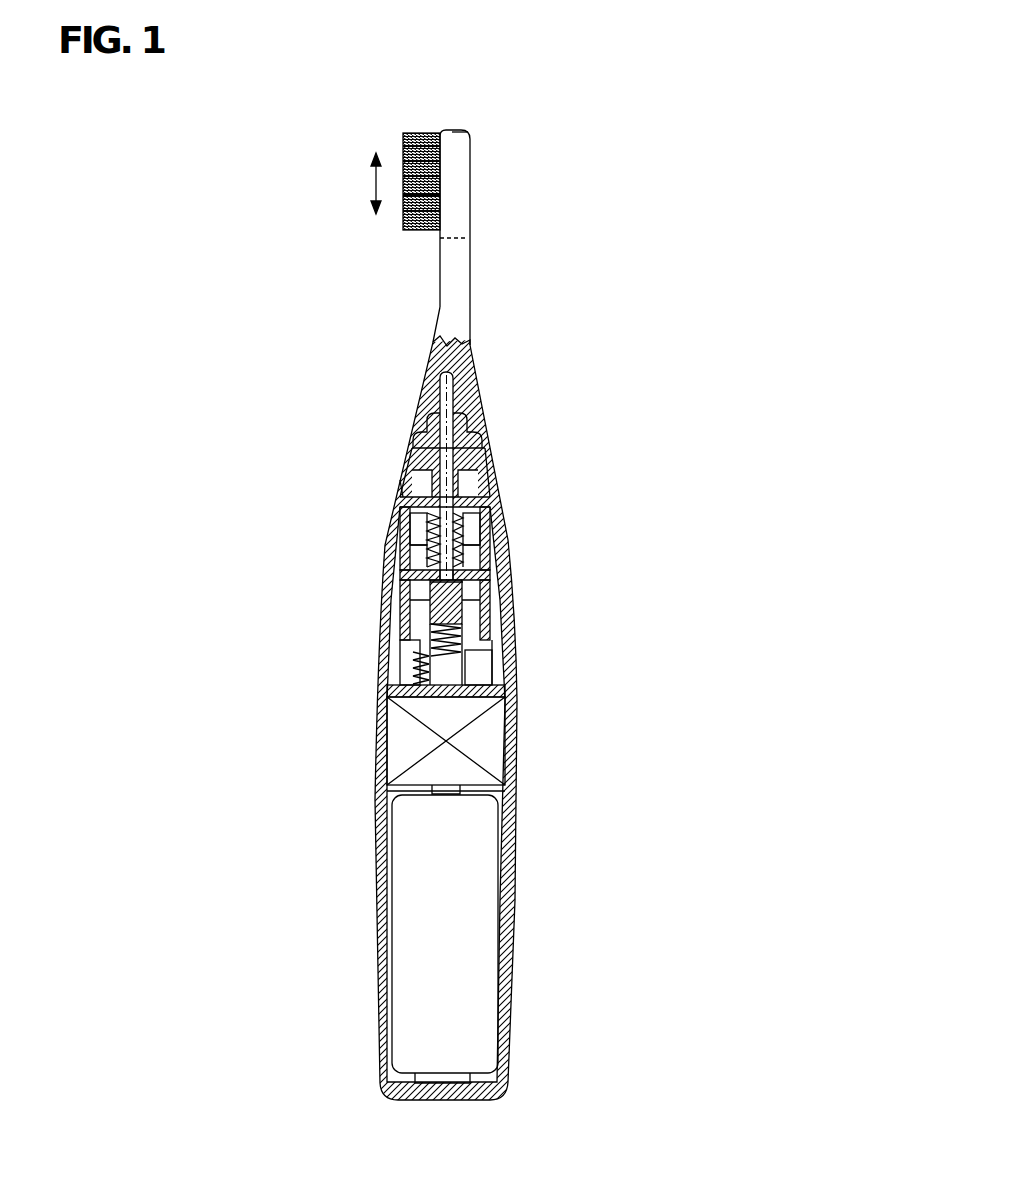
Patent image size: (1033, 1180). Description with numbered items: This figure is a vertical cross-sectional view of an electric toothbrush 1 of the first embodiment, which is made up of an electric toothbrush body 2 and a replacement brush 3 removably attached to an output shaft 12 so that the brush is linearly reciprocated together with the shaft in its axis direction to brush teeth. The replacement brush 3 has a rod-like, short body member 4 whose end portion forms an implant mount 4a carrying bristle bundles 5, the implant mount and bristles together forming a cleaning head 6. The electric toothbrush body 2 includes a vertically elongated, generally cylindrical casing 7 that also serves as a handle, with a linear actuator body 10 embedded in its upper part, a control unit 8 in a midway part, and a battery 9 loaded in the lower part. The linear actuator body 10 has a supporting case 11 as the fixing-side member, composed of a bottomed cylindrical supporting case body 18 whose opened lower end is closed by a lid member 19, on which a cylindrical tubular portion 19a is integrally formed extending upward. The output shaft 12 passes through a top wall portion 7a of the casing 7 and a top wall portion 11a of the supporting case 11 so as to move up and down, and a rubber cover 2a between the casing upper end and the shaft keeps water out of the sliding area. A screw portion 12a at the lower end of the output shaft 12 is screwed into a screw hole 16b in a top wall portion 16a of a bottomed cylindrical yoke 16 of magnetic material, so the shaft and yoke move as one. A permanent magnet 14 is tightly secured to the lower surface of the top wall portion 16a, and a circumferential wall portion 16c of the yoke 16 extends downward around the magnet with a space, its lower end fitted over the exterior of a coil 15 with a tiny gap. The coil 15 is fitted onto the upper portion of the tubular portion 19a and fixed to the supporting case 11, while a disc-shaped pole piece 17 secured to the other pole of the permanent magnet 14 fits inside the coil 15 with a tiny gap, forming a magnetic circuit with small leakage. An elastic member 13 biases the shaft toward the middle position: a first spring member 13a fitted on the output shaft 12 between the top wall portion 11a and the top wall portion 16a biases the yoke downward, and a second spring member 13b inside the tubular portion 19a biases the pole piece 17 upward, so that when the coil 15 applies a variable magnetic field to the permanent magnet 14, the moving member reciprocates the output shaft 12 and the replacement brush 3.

The electric toothbrush 1 is at (634, 222).
The electric toothbrush body 2 is at (346, 805).
The rubber cover 2a is at (470, 432).
The replacement brush 3 is at (490, 281).
The body member 4 is at (465, 323).
The implant mount 4a is at (463, 182).
The bristle bundles 5 is at (418, 133).
The cleaning head 6 is at (397, 241).
The casing 7 is at (378, 905).
The top wall portion of the casing 7a is at (484, 478).
The control unit 8 is at (495, 752).
The battery 9 is at (478, 925).
The linear actuator body 10 is at (380, 690).
The supporting case 11 is at (384, 602).
The top wall portion of the supporting case 11a is at (400, 487).
The output shaft 12 is at (430, 447).
The screw portion 12a is at (402, 583).
The elastic member 13 is at (441, 590).
The first spring member 13a is at (500, 516).
The second spring member 13b is at (412, 656).
The permanent magnet 14 is at (505, 591).
The coil 15 is at (510, 631).
The yoke 16 is at (398, 556).
The top wall portion of the yoke 16a is at (510, 566).
The screw hole 16b is at (497, 549).
The circumferential wall portion 16c is at (518, 606).
The pole piece 17 is at (405, 626).
The supporting case body 18 is at (518, 676).
The lid member 19 is at (415, 710).
The tubular portion 19a is at (510, 661).